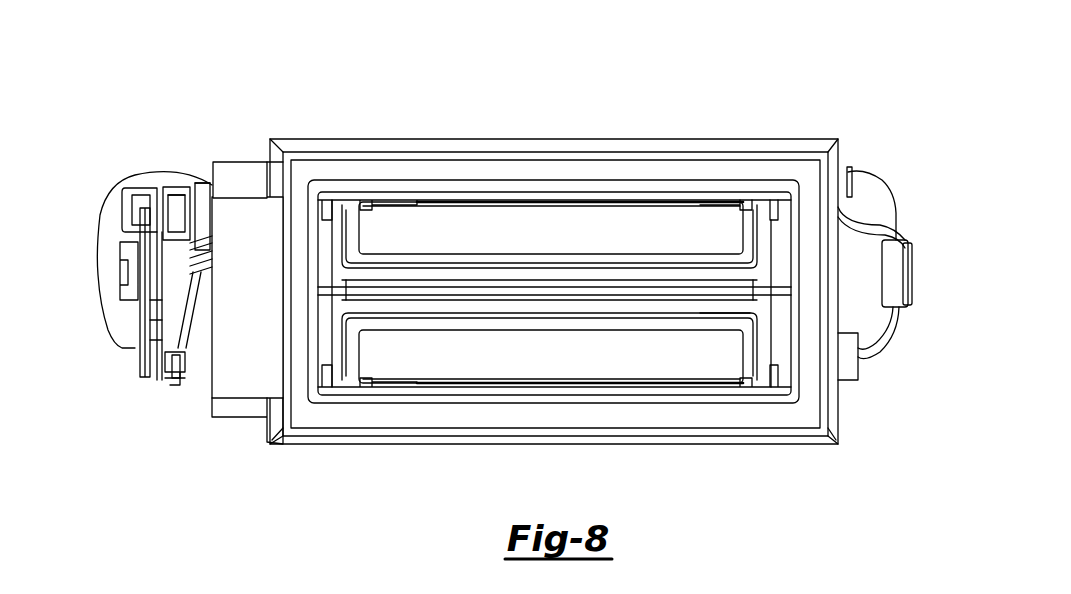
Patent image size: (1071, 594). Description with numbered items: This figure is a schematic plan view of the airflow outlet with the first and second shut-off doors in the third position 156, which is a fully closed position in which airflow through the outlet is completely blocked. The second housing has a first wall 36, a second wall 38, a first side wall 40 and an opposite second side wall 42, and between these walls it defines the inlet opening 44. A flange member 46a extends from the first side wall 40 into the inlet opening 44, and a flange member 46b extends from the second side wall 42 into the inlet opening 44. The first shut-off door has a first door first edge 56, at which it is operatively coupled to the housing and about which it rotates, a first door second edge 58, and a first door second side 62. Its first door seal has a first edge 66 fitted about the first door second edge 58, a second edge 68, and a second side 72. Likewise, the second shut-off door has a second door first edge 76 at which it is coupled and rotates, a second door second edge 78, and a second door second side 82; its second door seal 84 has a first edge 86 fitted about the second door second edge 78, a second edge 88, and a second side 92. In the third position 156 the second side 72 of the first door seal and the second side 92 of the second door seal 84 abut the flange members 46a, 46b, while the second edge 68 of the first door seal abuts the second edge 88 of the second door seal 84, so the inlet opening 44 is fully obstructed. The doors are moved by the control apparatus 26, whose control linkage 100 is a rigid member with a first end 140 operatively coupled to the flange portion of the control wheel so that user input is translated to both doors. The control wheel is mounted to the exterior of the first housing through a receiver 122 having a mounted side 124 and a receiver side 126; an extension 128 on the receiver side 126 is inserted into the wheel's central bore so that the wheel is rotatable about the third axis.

The control apparatus 26 is at (136, 357).
The first wall 36 is at (441, 200).
The second wall 38 is at (378, 395).
The first side wall 40 is at (310, 246).
The second side wall 42 is at (793, 209).
The inlet opening 44 is at (771, 383).
The flange member 46a is at (325, 347).
The flange member 46b is at (780, 355).
The first door first edge 56 is at (594, 202).
The first door second edge 58 is at (588, 253).
The first door second side 62 is at (489, 236).
The first edge 66 is at (598, 274).
The second edge 68 is at (538, 287).
The second side 72 is at (436, 290).
The second door first edge 76 is at (589, 384).
The second door second edge 78 is at (646, 321).
The second door second side 82 is at (488, 370).
The second door seal 84 is at (488, 318).
The first edge 86 is at (404, 319).
The second edge 88 is at (398, 298).
The second side 92 is at (672, 323).
The control linkage 100 is at (178, 365).
The receiver 122 is at (184, 196).
The mounted side 124 is at (206, 194).
The receiver side 126 is at (181, 212).
The extension 128 is at (123, 267).
The first end 140 is at (174, 380).
The third position 156 is at (826, 80).